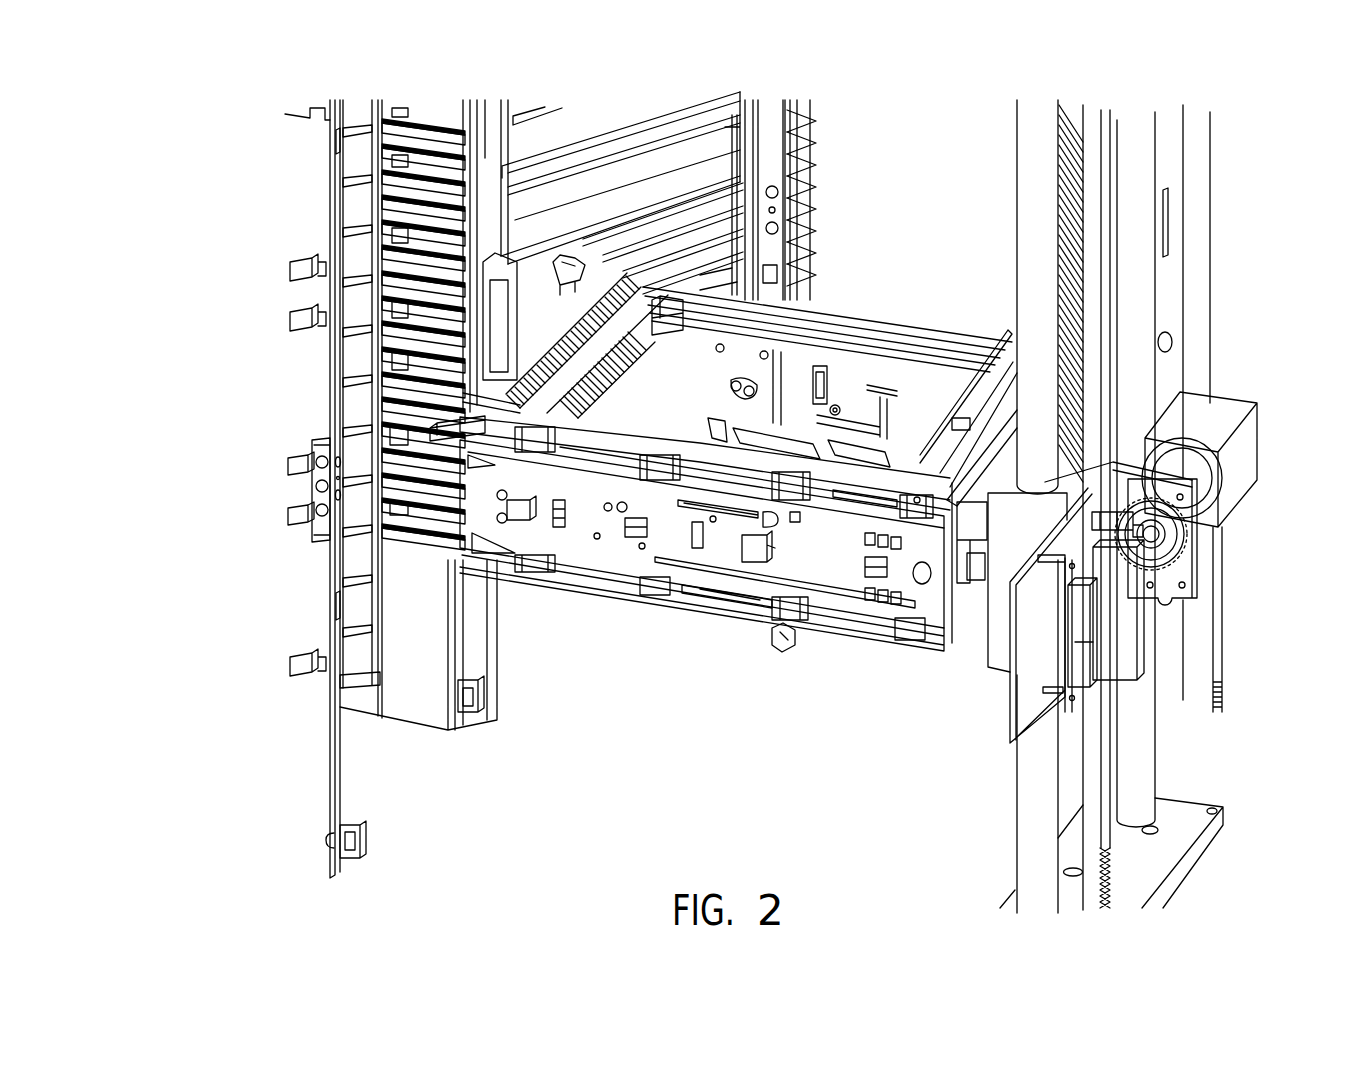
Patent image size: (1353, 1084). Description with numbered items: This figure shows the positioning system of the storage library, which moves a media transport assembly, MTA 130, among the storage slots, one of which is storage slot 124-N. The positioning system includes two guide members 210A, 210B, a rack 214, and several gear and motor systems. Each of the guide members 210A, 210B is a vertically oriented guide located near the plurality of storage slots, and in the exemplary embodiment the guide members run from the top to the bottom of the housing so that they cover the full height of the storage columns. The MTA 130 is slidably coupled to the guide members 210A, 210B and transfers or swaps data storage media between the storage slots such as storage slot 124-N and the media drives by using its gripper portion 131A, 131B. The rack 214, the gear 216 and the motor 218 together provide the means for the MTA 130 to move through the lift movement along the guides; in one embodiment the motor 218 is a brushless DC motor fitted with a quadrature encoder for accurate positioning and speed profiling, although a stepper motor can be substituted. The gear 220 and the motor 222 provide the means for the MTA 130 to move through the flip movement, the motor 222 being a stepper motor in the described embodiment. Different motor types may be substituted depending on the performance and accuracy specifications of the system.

The storage slot 124-N is at (354, 668).
The MTA 130 is at (624, 427).
The gripper portion 131A is at (434, 424).
The gripper portion 131B is at (556, 262).
The motor 222 is at (940, 457).
The gear 220 is at (993, 457).
The motor 218 is at (1222, 397).
The gear 216 is at (1174, 598).
The guide member 210A is at (1017, 805).
The guide member 210B is at (1154, 750).
The rack 214 is at (1107, 835).